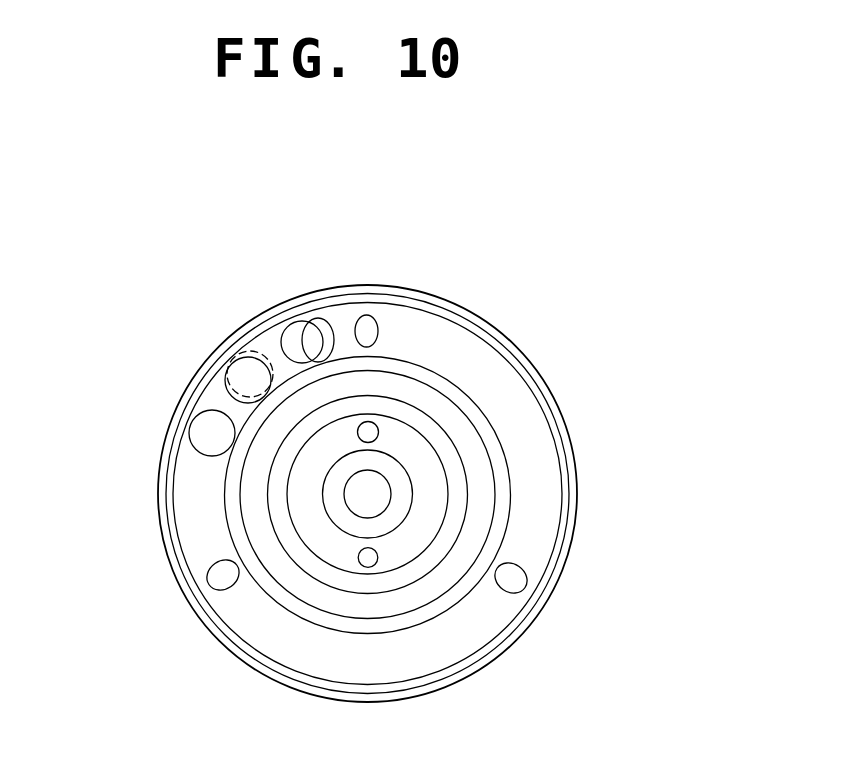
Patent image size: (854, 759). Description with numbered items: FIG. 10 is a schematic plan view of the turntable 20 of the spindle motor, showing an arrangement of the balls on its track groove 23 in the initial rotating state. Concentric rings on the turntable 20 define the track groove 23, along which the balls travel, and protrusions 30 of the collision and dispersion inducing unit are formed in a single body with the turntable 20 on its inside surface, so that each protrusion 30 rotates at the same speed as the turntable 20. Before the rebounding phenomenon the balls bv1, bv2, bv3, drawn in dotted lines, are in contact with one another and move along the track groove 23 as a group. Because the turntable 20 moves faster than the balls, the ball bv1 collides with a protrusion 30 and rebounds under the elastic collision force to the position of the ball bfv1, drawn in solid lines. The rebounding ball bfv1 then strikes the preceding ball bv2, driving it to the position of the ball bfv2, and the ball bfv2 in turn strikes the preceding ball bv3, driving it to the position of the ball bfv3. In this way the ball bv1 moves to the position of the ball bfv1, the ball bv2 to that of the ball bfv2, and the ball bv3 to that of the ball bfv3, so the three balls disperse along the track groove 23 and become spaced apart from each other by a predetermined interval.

The turntable 20 is at (115, 284).
The track groove 23 is at (438, 311).
The protrusion 30 is at (372, 316).
The ball before rebounding bv1 is at (335, 319).
The ball after rebounding bfv1 is at (298, 321).
The ball before rebounding bv2 is at (258, 352).
The ball after rebounding bfv2 is at (235, 372).
The ball before rebounding bv3 is at (235, 378).
The ball after rebounding bfv3 is at (203, 432).